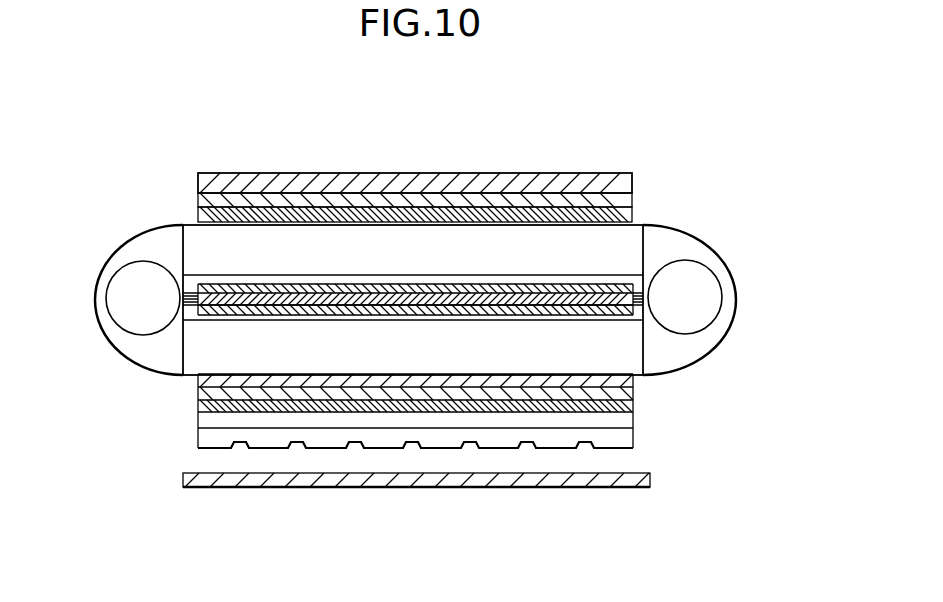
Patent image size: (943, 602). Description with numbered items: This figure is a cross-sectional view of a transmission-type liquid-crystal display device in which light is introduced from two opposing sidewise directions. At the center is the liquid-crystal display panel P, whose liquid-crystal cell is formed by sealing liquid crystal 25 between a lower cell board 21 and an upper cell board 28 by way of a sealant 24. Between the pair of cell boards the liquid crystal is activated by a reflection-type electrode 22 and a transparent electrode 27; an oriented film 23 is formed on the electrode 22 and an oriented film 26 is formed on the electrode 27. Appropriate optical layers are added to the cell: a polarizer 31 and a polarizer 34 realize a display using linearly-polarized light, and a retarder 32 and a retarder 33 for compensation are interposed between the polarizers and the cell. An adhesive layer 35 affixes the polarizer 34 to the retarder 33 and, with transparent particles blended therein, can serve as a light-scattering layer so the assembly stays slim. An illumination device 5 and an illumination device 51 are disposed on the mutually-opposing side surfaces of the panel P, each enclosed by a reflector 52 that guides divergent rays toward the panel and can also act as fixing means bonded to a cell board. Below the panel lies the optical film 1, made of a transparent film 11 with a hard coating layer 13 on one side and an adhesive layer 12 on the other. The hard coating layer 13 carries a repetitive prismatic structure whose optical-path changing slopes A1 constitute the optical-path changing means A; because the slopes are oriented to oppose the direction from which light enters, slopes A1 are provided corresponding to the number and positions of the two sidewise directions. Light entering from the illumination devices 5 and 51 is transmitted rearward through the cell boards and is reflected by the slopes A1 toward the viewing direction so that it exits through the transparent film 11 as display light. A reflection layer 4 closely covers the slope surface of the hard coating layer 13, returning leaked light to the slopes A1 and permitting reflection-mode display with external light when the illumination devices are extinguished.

The optical film 1 is at (733, 478).
The transparent film 11 is at (625, 425).
The adhesive layer 12 is at (633, 412).
The hard coating layer 13 is at (618, 440).
The lower cell board 21 is at (635, 358).
The reflection-type electrode 22 is at (637, 322).
The oriented film 23 is at (633, 310).
The sealant 24 is at (641, 294).
The liquid crystal 25 is at (300, 303).
The oriented film 26 is at (623, 284).
The transparent electrode 27 is at (603, 273).
The upper cell board 28 is at (577, 232).
The polarizer 31 is at (633, 395).
The retarder 32 is at (633, 380).
The retarder 33 is at (548, 216).
The polarizer 34 is at (482, 184).
The adhesive layer 35 is at (517, 201).
The reflection layer 4 is at (408, 479).
The illumination device 5 is at (123, 313).
The illumination device 51 is at (713, 297).
The reflector 52 is at (730, 327).
The optical-path changing means A is at (531, 448).
The optical-path changing slope A1 is at (588, 450).
The liquid-crystal display panel P is at (713, 177).